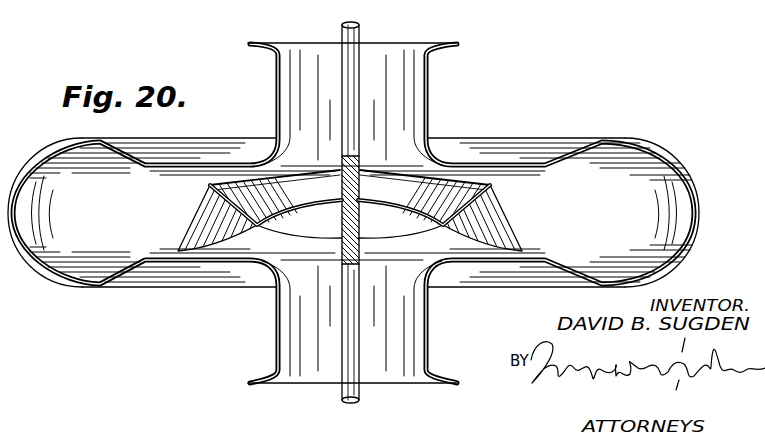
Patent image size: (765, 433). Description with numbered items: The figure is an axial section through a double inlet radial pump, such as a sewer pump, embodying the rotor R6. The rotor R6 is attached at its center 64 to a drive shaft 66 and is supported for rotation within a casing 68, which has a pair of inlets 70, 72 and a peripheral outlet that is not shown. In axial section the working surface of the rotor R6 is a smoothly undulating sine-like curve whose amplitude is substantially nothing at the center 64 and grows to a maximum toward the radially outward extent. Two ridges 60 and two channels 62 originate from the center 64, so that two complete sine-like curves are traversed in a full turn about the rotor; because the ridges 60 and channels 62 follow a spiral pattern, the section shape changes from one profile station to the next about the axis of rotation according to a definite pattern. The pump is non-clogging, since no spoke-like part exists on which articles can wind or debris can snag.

The ridge 60 is at (210, 184).
The channel 62 is at (260, 220).
The center 64 is at (358, 200).
The drive shaft 66 is at (354, 52).
The casing 68 is at (680, 170).
The inlet 70 is at (392, 376).
The inlet 72 is at (418, 50).
The rotor R6 is at (528, 215).